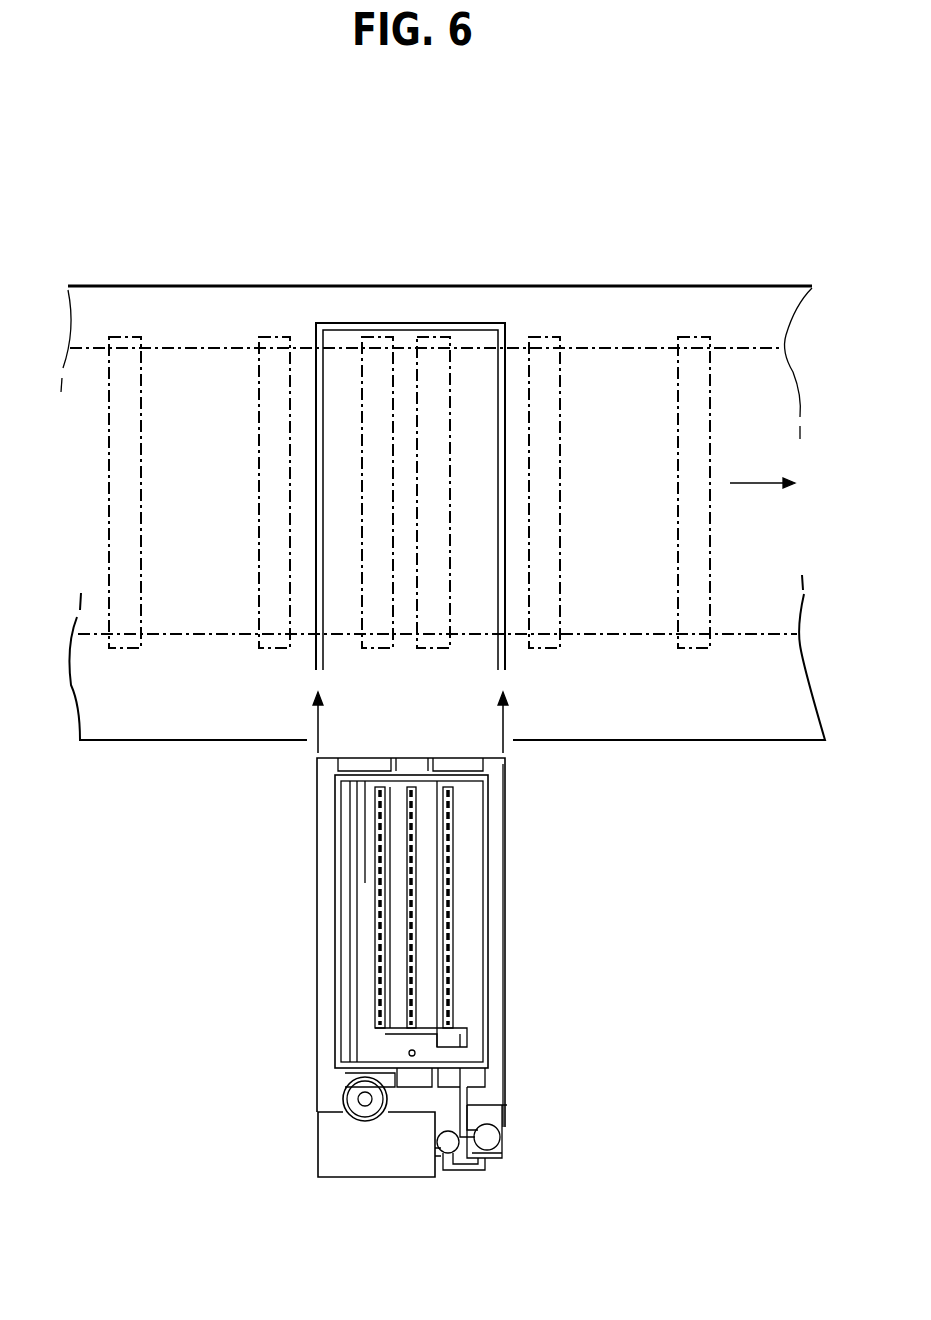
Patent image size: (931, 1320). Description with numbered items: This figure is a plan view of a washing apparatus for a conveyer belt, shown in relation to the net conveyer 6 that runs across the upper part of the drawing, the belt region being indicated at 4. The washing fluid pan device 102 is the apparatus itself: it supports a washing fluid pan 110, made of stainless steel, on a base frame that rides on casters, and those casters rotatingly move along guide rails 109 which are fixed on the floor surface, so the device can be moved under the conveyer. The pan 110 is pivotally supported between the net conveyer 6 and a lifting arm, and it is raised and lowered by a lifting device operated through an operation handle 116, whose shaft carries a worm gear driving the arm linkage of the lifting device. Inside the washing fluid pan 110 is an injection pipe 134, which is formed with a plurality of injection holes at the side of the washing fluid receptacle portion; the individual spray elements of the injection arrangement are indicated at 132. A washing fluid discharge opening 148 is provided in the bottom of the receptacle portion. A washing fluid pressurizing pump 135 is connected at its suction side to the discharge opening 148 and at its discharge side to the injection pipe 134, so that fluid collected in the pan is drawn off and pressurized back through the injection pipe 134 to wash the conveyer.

The conveyor 4 is at (370, 287).
The net conveyer 6 is at (180, 345).
The guide rails 109 is at (420, 323).
The washing fluid pan device 102 is at (378, 1006).
The washing fluid pan 110 is at (490, 958).
The spray tubes 132 is at (450, 860).
The injection pipe 134 is at (376, 965).
The washing fluid discharge opening 148 is at (409, 1052).
The operation handle 116 is at (343, 1094).
The washing fluid pressurizing pump 135 is at (352, 1180).